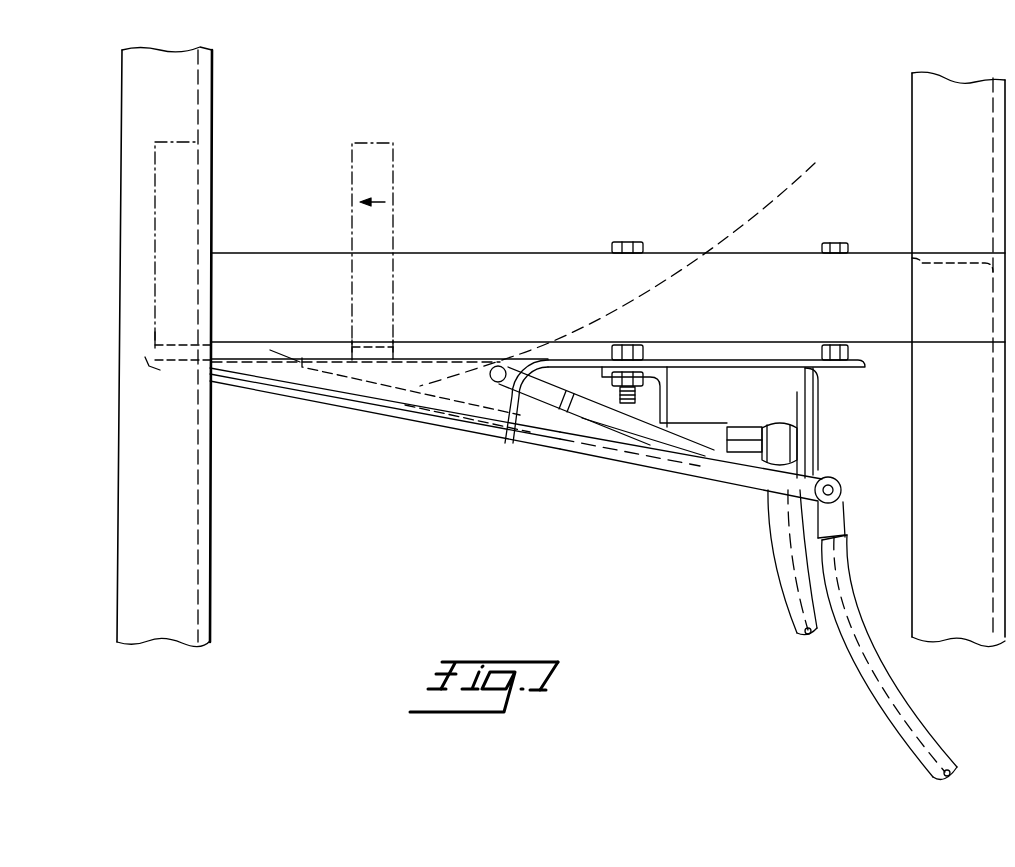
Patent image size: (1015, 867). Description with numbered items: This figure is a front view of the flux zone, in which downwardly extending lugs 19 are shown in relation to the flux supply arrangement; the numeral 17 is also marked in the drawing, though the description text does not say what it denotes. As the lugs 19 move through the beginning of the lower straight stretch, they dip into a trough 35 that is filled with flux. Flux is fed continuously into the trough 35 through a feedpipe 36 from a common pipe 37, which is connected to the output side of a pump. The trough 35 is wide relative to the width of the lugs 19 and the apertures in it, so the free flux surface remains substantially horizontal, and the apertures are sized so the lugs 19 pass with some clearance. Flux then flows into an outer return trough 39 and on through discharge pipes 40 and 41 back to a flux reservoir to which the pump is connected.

The phantom panel position 17 is at (177, 152).
The lug 19 is at (378, 341).
The trough 35 is at (407, 380).
The feedpipe 36 is at (742, 472).
The common pipe 37 is at (858, 660).
The outer return trough 39 is at (248, 374).
The discharge pipe 40 is at (610, 456).
The discharge pipe 41 is at (785, 566).